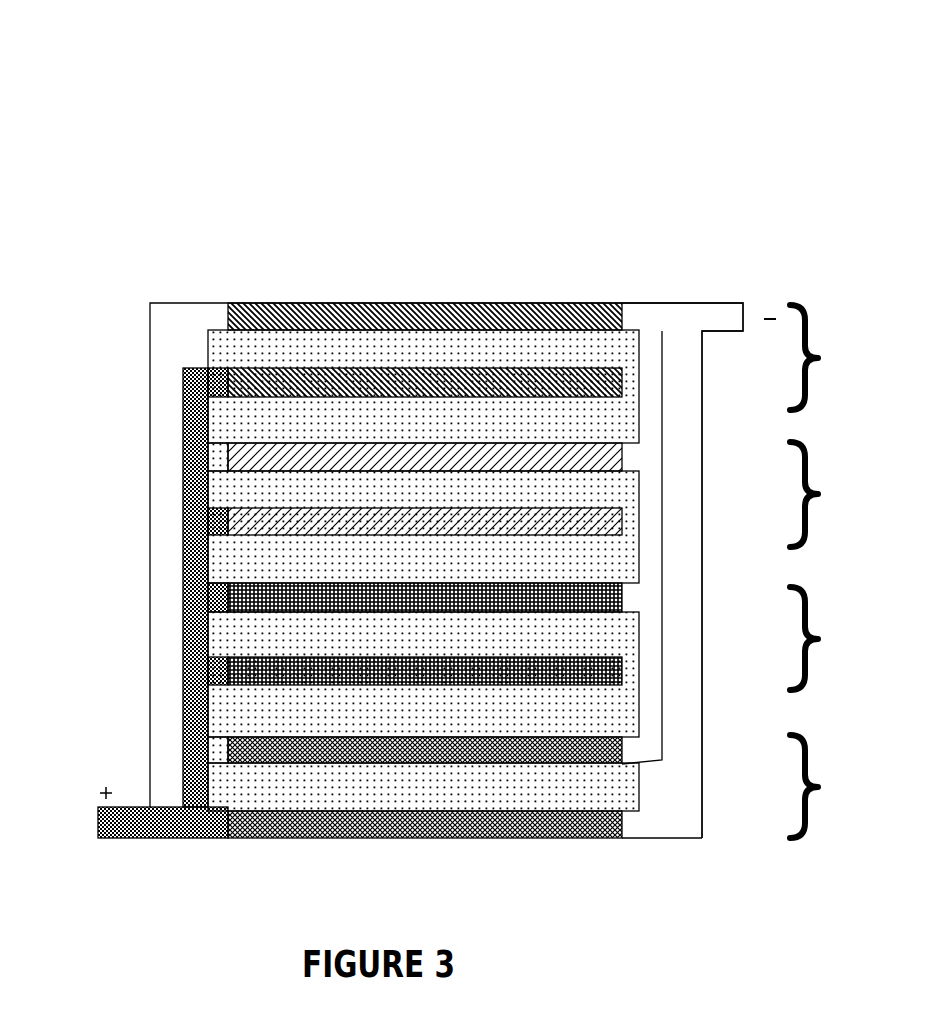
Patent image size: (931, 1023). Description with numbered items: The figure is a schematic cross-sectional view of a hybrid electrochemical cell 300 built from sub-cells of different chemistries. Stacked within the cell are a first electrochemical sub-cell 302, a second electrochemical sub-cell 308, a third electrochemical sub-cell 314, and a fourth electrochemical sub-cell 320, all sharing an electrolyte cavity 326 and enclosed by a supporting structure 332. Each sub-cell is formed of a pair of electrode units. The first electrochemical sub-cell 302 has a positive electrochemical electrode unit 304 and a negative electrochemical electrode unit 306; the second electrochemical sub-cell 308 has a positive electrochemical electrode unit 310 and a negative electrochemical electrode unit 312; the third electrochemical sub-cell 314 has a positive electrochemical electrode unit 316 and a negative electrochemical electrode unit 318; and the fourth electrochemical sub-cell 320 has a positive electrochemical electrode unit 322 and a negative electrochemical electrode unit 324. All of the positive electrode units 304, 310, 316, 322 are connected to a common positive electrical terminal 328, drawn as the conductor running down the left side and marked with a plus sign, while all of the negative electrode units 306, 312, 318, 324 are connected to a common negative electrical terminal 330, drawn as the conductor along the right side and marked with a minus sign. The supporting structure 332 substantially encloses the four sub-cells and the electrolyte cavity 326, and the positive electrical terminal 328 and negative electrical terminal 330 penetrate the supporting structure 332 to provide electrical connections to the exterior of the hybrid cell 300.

The hybrid electrochemical cell 300 is at (118, 94).
The first electrochemical sub-cell 302 is at (835, 357).
The positive electrochemical electrode unit 304 is at (228, 382).
The negative electrochemical electrode unit 306 is at (228, 318).
The second electrochemical sub-cell 308 is at (835, 494).
The positive electrochemical electrode unit 310 is at (228, 523).
The negative electrochemical electrode unit 312 is at (228, 457).
The third electrochemical sub-cell 314 is at (835, 638).
The positive electrochemical electrode unit 316 is at (228, 671).
The negative electrochemical electrode unit 318 is at (228, 597).
The fourth electrochemical sub-cell 320 is at (835, 786).
The positive electrochemical electrode unit 322 is at (228, 821).
The negative electrochemical electrode unit 324 is at (228, 747).
The electrolyte cavity 326 is at (397, 345).
The positive electrical terminal 328 is at (152, 838).
The negative electrical terminal 330 is at (708, 317).
The supporting structure 332 is at (677, 828).